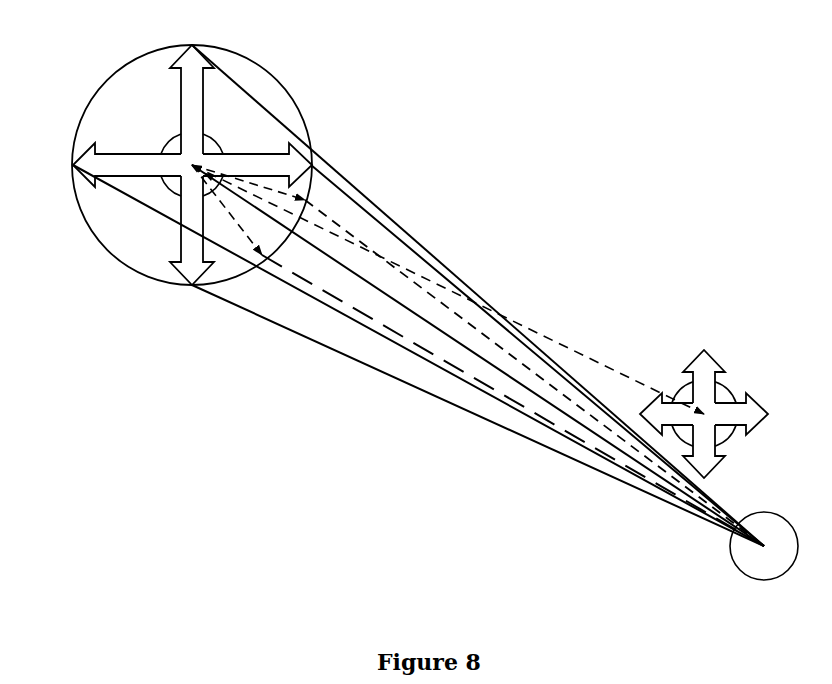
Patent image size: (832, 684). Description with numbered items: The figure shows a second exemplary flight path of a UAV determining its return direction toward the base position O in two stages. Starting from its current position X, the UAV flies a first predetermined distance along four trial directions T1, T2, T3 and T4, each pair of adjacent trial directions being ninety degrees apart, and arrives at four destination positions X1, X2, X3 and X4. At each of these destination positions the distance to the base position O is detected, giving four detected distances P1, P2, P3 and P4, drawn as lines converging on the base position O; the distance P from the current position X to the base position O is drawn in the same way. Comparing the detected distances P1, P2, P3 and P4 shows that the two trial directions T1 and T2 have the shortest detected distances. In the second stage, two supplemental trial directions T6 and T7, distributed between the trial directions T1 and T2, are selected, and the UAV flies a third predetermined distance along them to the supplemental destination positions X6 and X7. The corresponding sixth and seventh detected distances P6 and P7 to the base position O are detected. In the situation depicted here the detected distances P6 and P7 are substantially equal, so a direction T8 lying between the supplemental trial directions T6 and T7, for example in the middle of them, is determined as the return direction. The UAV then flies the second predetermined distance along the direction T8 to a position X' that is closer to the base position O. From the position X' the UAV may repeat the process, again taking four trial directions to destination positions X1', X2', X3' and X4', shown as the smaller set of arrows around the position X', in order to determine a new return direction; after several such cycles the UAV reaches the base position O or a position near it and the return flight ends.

The first position X is at (188, 158).
The destination position X1 is at (330, 157).
The destination position X2 is at (192, 297).
The destination position X3 is at (53, 167).
The destination position X4 is at (192, 35).
The supplemental destination position X6 is at (287, 260).
The supplemental destination position X7 is at (318, 198).
The position X' is at (708, 409).
The translated second position (right) X1' is at (785, 415).
The translated second position (down) X2' is at (722, 485).
The translated second position (left) X3' is at (632, 403).
The translated second position (up) X4' is at (705, 343).
The trial direction T1 is at (485, 289).
The trial direction T2 is at (447, 327).
The trial direction T3 is at (383, 289).
The trial direction T4 is at (447, 224).
The supplemental trial direction T6 is at (227, 210).
The supplemental trial direction T7 is at (248, 182).
The return direction T8 is at (448, 289).
The projection line from X to origin P is at (478, 355).
The detected distance P1 is at (537, 355).
The detected distance P2 is at (478, 415).
The detected distance P3 is at (418, 355).
The detected distance P4 is at (478, 295).
The sixth detected distance P6 is at (513, 400).
The seventh detected distance P7 is at (534, 373).
The base position O is at (764, 555).